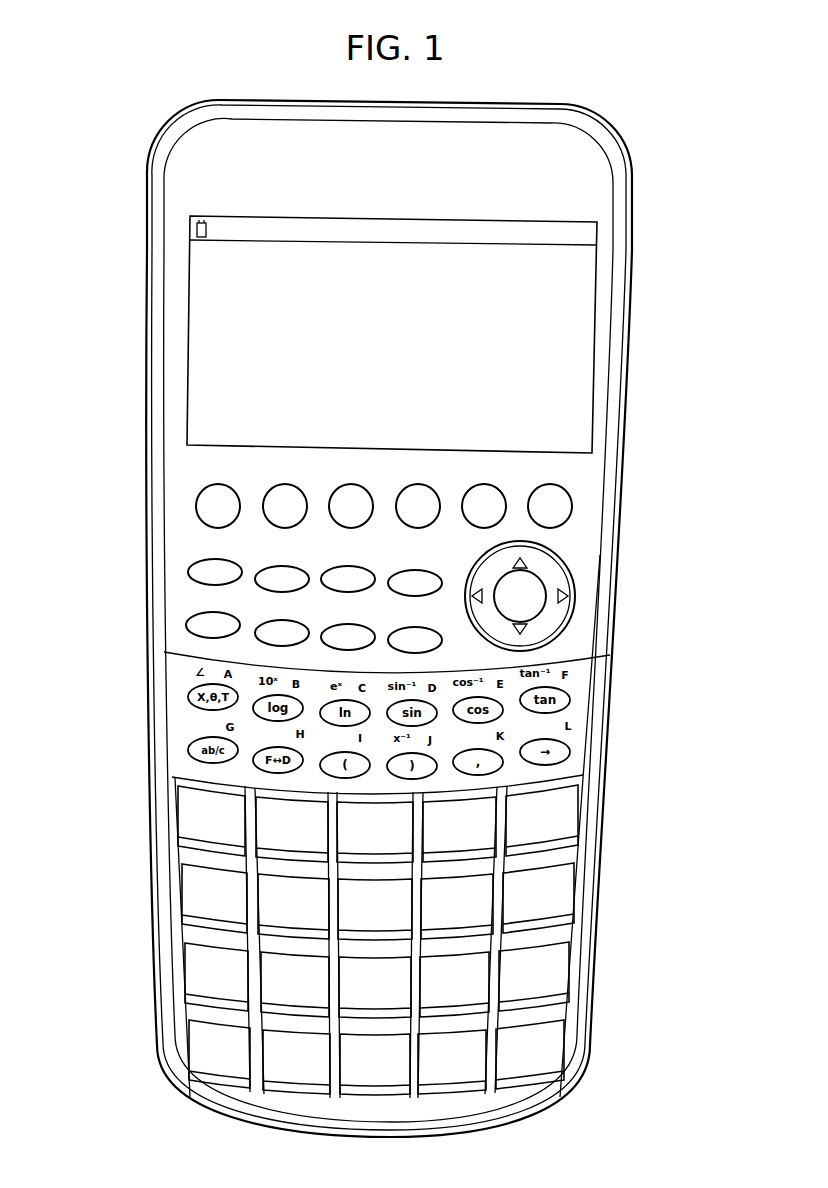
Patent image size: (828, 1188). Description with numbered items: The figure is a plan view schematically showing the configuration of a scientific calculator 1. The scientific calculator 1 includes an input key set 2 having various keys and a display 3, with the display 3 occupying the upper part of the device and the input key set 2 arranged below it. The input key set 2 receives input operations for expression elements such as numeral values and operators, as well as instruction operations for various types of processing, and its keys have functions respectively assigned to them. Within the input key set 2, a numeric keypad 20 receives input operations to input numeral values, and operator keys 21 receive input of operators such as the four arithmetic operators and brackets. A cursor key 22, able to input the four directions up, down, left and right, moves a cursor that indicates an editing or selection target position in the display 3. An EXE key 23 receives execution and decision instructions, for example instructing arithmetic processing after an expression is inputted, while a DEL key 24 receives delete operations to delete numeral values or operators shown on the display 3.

The scientific calculator 1 is at (128, 143).
The input key set 2 is at (127, 500).
The display 3 is at (598, 238).
The numeric keypad 20 is at (131, 856).
The operator keys 21 is at (612, 893).
The cursor key 22 is at (575, 590).
The EXE key 23 is at (548, 1066).
The DEL key 24 is at (490, 794).